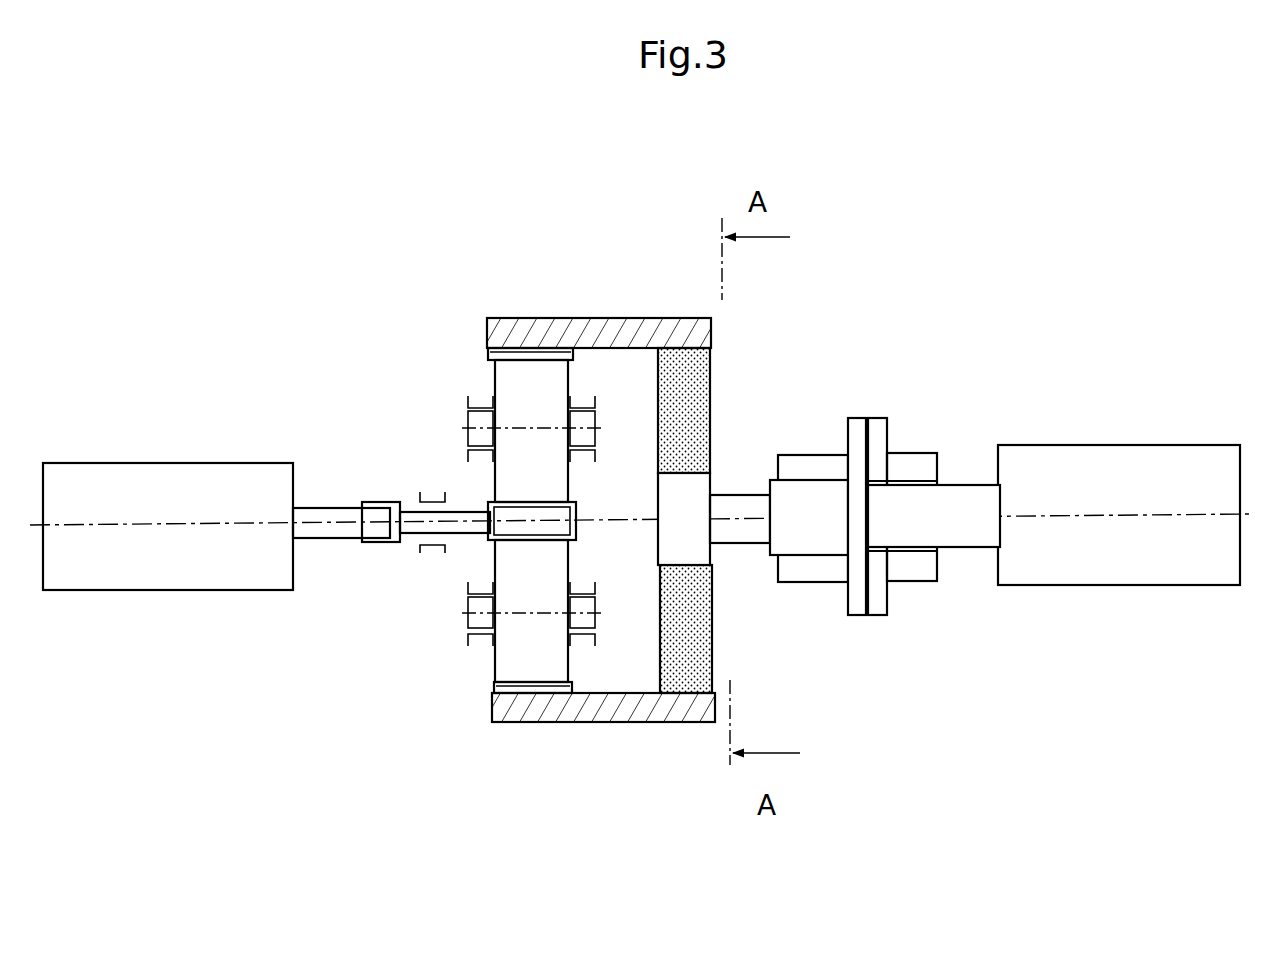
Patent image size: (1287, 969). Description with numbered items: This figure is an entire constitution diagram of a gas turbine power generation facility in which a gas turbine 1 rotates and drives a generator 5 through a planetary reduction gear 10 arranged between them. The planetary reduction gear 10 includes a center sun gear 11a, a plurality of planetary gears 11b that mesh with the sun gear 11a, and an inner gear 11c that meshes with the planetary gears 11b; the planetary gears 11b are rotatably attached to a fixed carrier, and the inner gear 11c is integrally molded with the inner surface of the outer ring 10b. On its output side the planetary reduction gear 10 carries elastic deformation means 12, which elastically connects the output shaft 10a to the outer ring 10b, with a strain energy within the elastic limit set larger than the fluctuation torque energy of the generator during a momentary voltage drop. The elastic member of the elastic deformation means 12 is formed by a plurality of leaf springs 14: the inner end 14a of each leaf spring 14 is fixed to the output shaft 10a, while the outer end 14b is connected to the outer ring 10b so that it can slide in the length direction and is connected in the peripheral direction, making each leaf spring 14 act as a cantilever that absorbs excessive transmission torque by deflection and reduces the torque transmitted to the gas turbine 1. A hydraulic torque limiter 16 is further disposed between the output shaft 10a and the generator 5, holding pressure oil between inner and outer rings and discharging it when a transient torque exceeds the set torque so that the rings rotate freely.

The gas turbine 1 is at (107, 480).
The generator 5 is at (1127, 457).
The planetary reduction gear 10 is at (545, 449).
The output shaft 10a is at (720, 522).
The outer ring 10b is at (618, 327).
The sun gear 11a is at (497, 528).
The planetary gears 11b is at (512, 445).
The inner gear 11c is at (492, 356).
The elastic deformation means 12 is at (746, 500).
The leaf springs 14 is at (688, 418).
The inner end 14a is at (697, 588).
The outer end 14b is at (698, 680).
The hydraulic torque limiter 16 is at (928, 445).